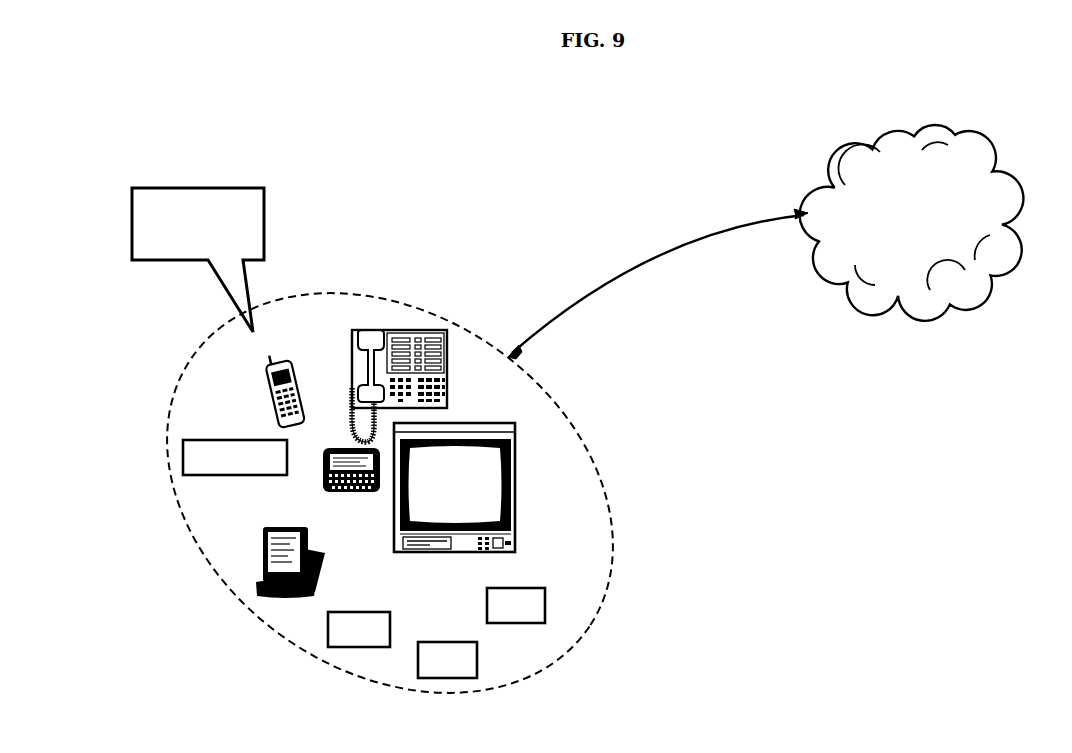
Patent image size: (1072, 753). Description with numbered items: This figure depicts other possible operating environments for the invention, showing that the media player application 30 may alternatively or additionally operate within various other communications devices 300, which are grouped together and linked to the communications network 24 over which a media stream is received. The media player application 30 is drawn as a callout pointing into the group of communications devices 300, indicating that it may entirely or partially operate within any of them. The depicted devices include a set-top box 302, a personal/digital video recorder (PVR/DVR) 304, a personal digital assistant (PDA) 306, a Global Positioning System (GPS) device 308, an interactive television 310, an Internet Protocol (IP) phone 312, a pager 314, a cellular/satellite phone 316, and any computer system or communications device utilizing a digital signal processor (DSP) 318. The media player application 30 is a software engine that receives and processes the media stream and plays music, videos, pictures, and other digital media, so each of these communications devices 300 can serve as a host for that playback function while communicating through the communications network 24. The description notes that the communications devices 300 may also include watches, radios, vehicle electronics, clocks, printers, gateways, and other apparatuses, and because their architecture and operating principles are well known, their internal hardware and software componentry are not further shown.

The communications network 24 is at (845, 146).
The media player application 30 is at (166, 187).
The communications devices 300 is at (281, 636).
The set-top box 302 is at (440, 641).
The personal/digital video recorder (PVR/DVR) 304 is at (218, 477).
The personal digital assistant (PDA) 306 is at (265, 546).
The Global Positioning System (GPS) device 308 is at (345, 611).
The interactive television 310 is at (437, 553).
The Internet Protocol (IP) phone 312 is at (352, 337).
The pager 314 is at (355, 493).
The cellular/satellite phone 316 is at (268, 391).
The digital signal processor (DSP) 318 is at (547, 605).